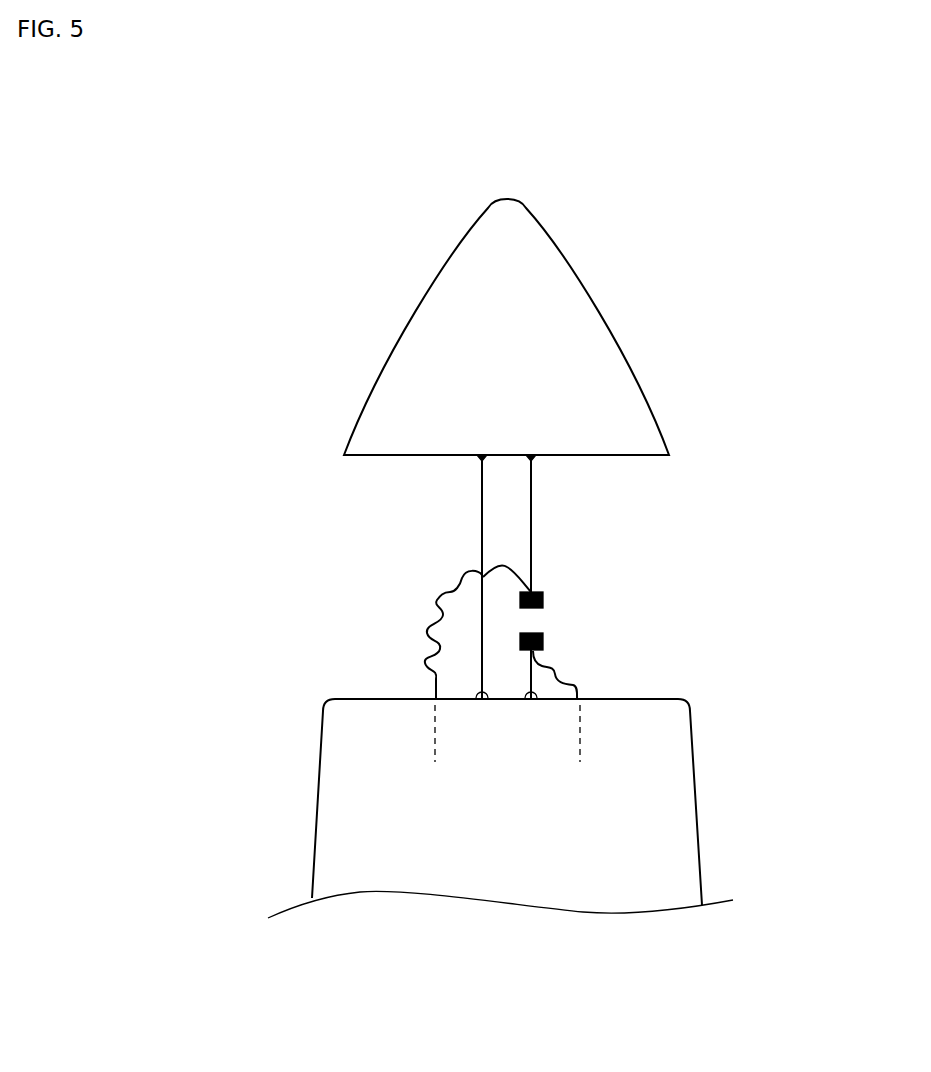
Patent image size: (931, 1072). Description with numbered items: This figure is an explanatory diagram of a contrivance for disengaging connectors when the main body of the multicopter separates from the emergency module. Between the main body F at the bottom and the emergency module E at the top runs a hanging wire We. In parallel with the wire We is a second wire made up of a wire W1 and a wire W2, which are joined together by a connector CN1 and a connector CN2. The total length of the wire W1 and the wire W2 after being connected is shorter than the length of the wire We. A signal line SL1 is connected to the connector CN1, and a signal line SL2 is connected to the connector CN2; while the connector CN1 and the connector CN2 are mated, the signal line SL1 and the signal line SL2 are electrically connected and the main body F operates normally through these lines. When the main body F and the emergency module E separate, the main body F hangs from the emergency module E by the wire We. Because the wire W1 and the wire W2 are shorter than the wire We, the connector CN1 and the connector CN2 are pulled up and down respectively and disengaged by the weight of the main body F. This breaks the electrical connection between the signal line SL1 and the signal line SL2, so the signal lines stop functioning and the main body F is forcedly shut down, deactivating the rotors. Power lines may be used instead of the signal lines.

The emergency module E is at (588, 283).
The hanging wire We is at (482, 508).
The wire W1 is at (531, 530).
The wire W2 is at (532, 678).
The connector CN1 is at (543, 598).
The connector CN2 is at (543, 642).
The signal line SL1 is at (437, 601).
The signal line SL2 is at (577, 686).
The main body F is at (701, 822).